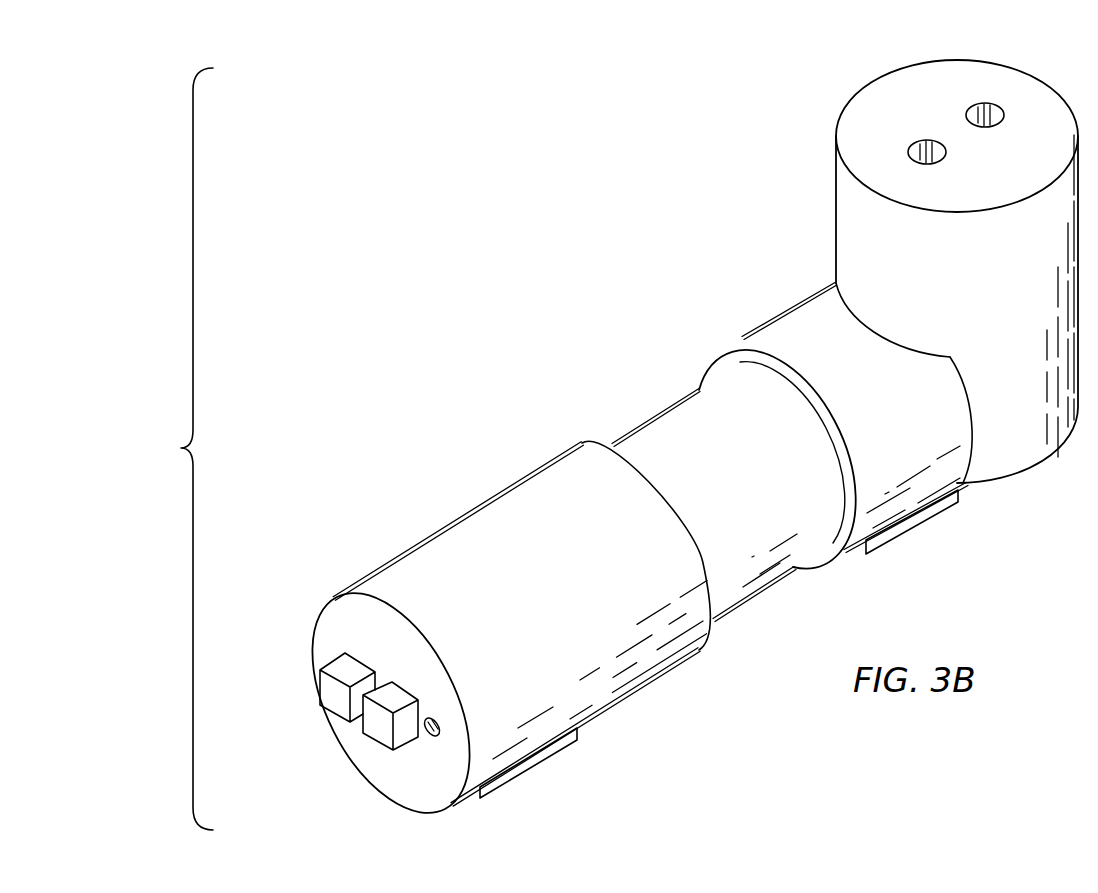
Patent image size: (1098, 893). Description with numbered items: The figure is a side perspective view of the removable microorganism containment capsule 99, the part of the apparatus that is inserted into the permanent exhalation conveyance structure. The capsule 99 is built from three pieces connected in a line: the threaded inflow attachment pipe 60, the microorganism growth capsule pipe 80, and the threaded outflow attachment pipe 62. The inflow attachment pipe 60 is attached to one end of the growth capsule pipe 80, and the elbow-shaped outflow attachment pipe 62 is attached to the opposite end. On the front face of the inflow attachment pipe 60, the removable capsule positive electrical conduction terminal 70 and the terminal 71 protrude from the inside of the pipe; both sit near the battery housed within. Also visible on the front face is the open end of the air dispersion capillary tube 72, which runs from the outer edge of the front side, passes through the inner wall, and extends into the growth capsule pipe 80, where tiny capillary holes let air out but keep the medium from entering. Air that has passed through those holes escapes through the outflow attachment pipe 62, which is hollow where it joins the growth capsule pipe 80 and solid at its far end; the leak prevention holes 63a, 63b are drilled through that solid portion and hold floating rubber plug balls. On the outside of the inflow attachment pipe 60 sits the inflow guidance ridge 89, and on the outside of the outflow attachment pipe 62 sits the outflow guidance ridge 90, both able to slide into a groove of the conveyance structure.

The capsule 99 is at (177, 449).
The threaded inflow attachment pipe 60 is at (550, 502).
The microorganism growth capsule pipe 80 is at (690, 437).
The threaded outflow attachment pipe 62 is at (812, 337).
The leak prevention hole 63a is at (940, 150).
The leak prevention hole 63b is at (993, 108).
The removable capsule positive electrical conduction terminal 70 is at (345, 675).
The terminal 71 is at (388, 693).
The air dispersion capillary tube 72 is at (431, 737).
The inflow guidance ridge 89 is at (568, 743).
The outflow guidance ridge 90 is at (922, 515).